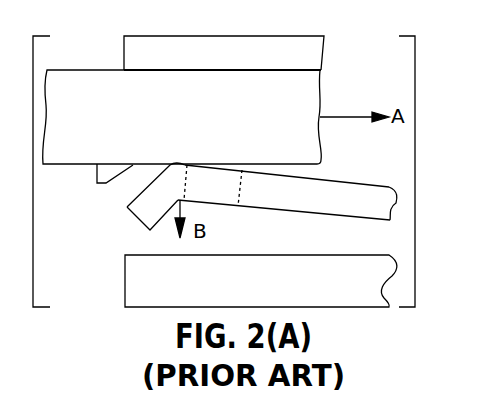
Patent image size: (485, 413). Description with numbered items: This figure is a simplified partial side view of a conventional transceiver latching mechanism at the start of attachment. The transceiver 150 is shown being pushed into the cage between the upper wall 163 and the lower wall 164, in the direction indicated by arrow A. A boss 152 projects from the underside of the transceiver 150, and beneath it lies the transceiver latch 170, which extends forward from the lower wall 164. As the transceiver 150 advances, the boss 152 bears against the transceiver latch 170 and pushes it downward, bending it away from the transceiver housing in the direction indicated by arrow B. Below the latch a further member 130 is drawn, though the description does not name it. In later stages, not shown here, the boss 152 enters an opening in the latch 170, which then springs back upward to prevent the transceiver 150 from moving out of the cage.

The lower substrate / bottom member 130 is at (260, 288).
The transceiver 150 is at (200, 123).
The boss 152 is at (96, 183).
The upper wall 163 is at (312, 50).
The lower wall 164 is at (388, 187).
The transceiver latch 170 is at (140, 205).